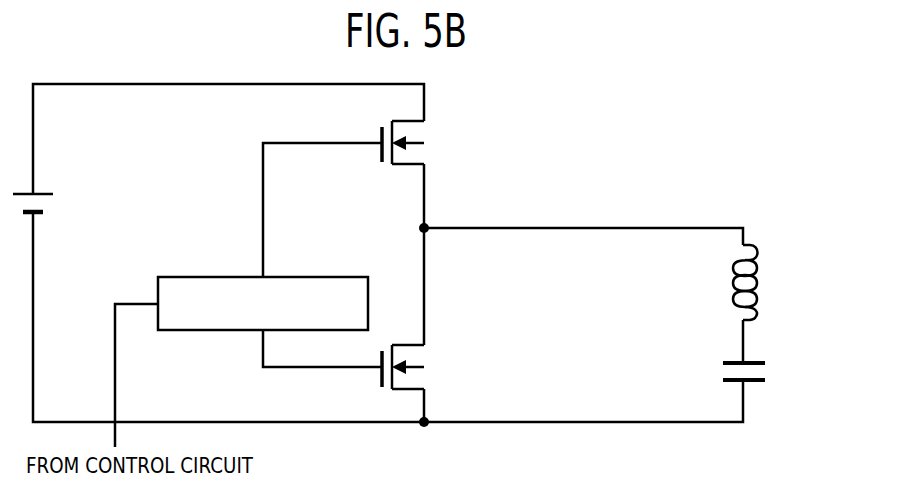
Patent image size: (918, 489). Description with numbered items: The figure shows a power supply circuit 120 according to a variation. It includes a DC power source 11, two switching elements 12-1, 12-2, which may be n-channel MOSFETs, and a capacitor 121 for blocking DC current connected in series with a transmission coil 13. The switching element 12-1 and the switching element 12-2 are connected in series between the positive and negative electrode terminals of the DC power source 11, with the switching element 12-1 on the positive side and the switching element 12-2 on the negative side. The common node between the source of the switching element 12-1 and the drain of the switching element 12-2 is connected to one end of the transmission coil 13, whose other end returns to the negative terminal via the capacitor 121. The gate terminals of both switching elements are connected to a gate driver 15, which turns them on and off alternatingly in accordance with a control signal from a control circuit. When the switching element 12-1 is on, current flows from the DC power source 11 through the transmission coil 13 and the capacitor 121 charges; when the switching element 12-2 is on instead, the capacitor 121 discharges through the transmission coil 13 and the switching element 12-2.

The DC power source 11 is at (55, 205).
The gate driver 15 is at (198, 277).
The switching element 12-1 is at (433, 145).
The switching element 12-2 is at (433, 369).
The transmission coil 13 is at (768, 288).
The capacitor 121 is at (773, 373).
The power supply circuit 120 is at (696, 152).